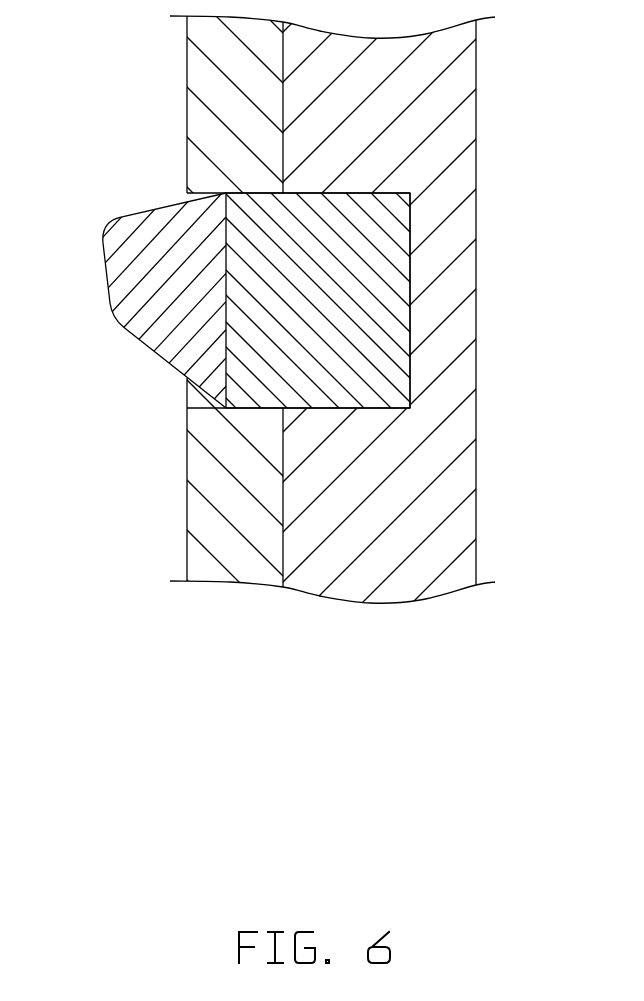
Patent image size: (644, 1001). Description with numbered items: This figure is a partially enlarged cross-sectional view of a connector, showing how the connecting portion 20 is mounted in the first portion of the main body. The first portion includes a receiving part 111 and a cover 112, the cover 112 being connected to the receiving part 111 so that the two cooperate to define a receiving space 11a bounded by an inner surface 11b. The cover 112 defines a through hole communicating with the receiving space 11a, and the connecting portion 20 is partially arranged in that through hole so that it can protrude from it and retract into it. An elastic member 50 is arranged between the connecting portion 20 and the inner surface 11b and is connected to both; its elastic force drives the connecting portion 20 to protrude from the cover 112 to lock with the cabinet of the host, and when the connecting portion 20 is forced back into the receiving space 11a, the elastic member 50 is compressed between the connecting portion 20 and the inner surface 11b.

The receiving part 111 is at (445, 98).
The cover 112 is at (212, 124).
The connecting portion 20 is at (137, 270).
The elastic member 50 is at (390, 290).
The receiving space 11a is at (188, 392).
The inner surface 11b is at (398, 353).